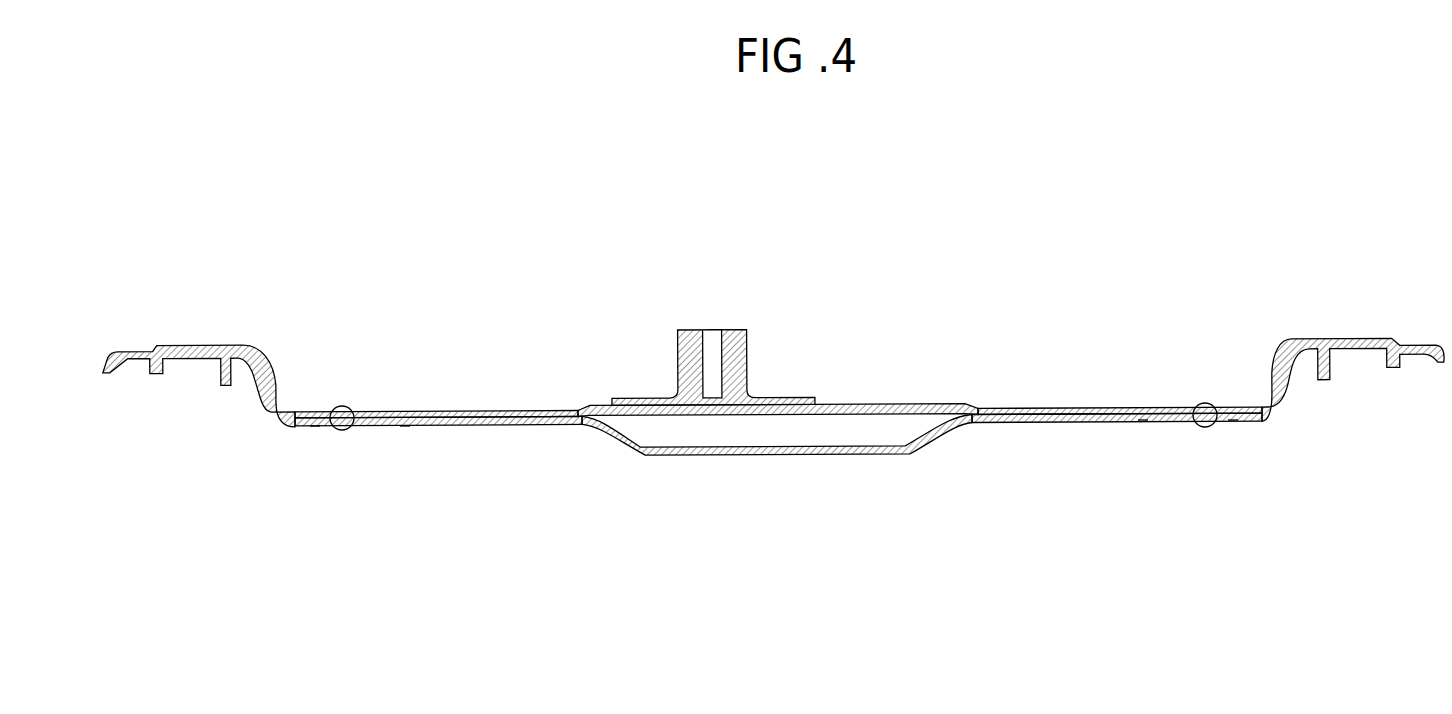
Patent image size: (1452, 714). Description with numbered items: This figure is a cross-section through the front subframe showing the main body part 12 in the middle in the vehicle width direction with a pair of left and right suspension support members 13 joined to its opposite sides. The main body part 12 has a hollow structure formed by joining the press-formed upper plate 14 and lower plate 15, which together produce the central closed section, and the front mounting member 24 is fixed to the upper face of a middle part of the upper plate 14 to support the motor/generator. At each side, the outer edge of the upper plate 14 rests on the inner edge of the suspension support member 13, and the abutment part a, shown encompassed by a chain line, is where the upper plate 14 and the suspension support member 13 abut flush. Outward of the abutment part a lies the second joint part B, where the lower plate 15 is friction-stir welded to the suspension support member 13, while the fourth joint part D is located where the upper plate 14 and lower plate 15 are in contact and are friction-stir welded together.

The main body part 12 is at (774, 381).
The suspension support member 13 is at (193, 340).
The upper plate 14 is at (855, 402).
The lower plate 15 is at (868, 456).
The front mounting member 24 is at (745, 355).
The abutment part a is at (348, 406).
The second joint part B is at (315, 426).
The fourth joint part D is at (406, 426).